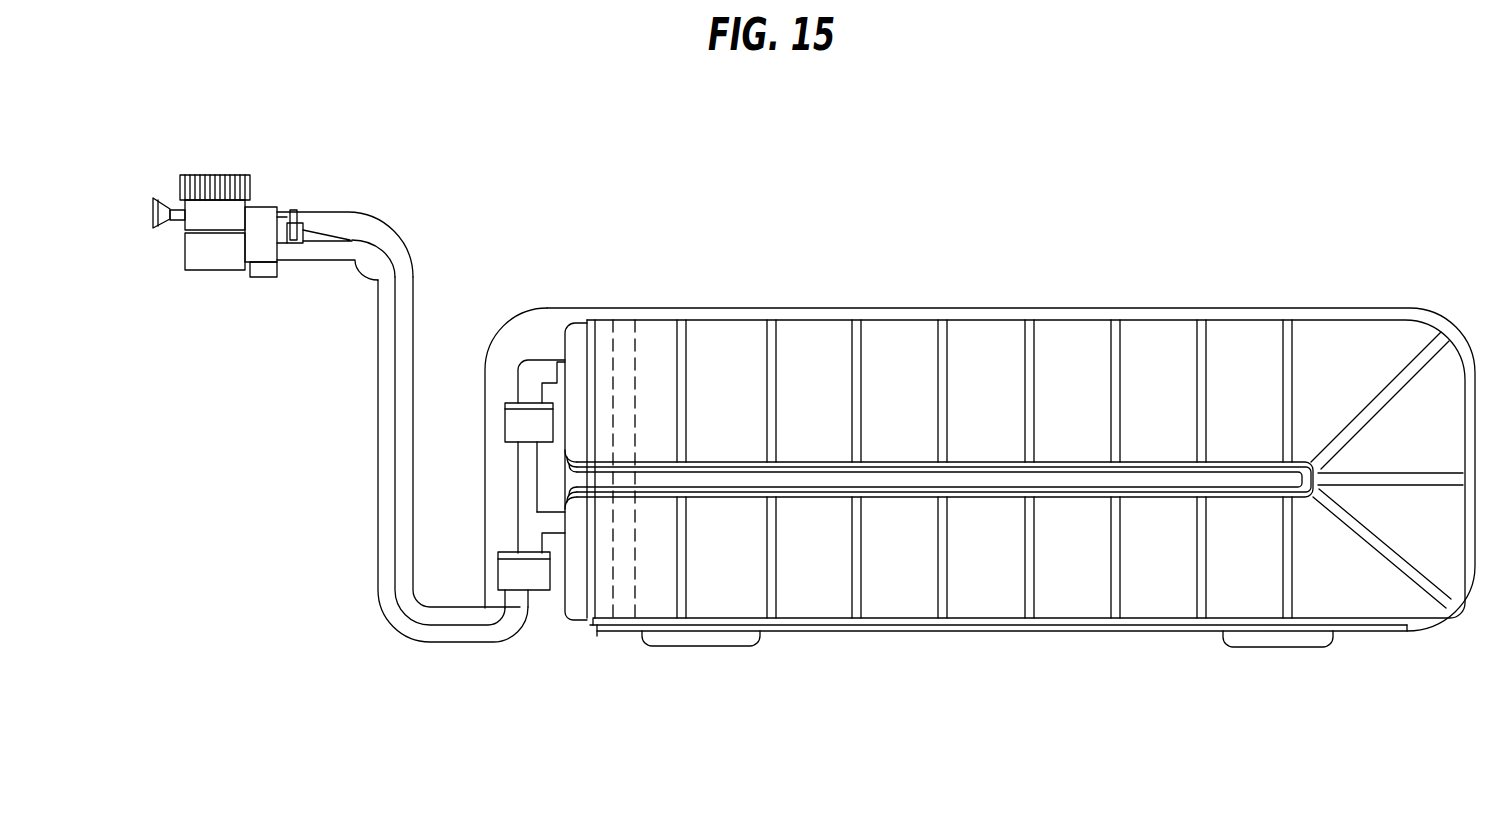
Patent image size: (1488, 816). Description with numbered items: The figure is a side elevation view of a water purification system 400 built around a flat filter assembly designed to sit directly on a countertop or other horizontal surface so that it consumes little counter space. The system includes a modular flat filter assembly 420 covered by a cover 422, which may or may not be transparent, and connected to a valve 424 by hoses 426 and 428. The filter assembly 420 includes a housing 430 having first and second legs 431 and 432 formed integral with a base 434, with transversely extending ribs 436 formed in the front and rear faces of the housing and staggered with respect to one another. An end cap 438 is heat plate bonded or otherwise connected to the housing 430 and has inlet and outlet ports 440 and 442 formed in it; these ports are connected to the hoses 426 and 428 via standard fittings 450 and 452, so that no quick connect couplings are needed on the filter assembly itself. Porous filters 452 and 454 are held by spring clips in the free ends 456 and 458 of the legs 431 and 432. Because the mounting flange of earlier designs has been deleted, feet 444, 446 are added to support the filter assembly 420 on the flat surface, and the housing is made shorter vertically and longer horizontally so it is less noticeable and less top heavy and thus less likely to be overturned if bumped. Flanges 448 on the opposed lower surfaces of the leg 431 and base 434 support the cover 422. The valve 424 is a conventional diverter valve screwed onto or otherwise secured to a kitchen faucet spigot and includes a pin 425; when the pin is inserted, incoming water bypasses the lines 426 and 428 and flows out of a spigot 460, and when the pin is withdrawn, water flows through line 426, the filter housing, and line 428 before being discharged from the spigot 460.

The water purification system 400 is at (768, 216).
The modular flat filter assembly 420 is at (909, 360).
The cover 422 is at (508, 336).
The valve 424 is at (205, 273).
The pin 425 is at (150, 197).
The hose 426 is at (378, 322).
The hose 428 is at (381, 227).
The housing 430 is at (1157, 318).
The first leg 431 is at (829, 628).
The second leg 432 is at (727, 334).
The base 434 is at (1383, 337).
The ribs 436 is at (774, 373).
The end cap 438 is at (581, 322).
The inlet port 440 is at (558, 584).
The outlet port 442 is at (560, 356).
The foot 444 is at (722, 647).
The foot 446 is at (1281, 646).
The flanges 448 is at (1057, 634).
The fitting 450 is at (500, 568).
The fitting 452 is at (505, 418).
The porous filter 454 is at (631, 323).
The free end 456 is at (598, 634).
The free end 458 is at (592, 321).
The spigot 460 is at (278, 212).